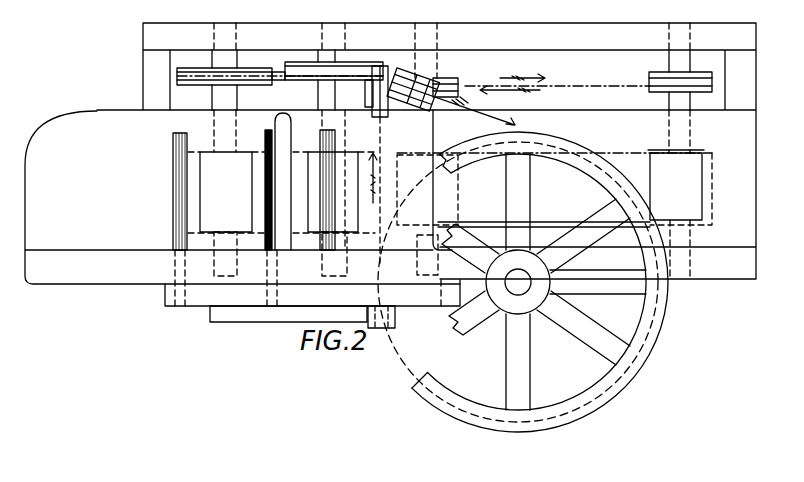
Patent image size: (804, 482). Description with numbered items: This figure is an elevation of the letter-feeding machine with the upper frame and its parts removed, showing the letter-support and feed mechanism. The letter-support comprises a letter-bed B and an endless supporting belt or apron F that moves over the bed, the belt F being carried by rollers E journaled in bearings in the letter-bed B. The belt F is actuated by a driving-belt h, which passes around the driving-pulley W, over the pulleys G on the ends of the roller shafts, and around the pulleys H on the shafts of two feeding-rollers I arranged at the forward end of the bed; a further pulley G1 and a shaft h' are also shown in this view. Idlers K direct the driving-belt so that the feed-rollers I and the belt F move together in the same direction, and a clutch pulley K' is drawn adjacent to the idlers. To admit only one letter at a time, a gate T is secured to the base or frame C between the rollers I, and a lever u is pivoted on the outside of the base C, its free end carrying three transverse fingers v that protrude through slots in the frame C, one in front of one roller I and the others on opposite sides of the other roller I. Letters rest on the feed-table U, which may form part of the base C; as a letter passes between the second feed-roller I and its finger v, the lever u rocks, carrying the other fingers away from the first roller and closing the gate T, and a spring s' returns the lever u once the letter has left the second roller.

The letter-bed B is at (720, 216).
The base or frame C is at (426, 151).
The roller E is at (686, 152).
The endless supporting belt or apron F is at (540, 282).
The pulley G is at (662, 72).
The pulley G1 is at (446, 78).
The pulley H is at (355, 50).
The driving-belt h is at (461, 159).
The inclined shaft h' is at (453, 110).
The feeding-roller I is at (281, 214).
The idler K is at (367, 91).
The clutch pulley K' is at (413, 99).
The gate T is at (283, 181).
The feed-table U is at (300, 283).
The lever u is at (319, 308).
The transverse finger v is at (325, 125).
The spring s' is at (288, 325).
The driving-pulley W is at (622, 368).